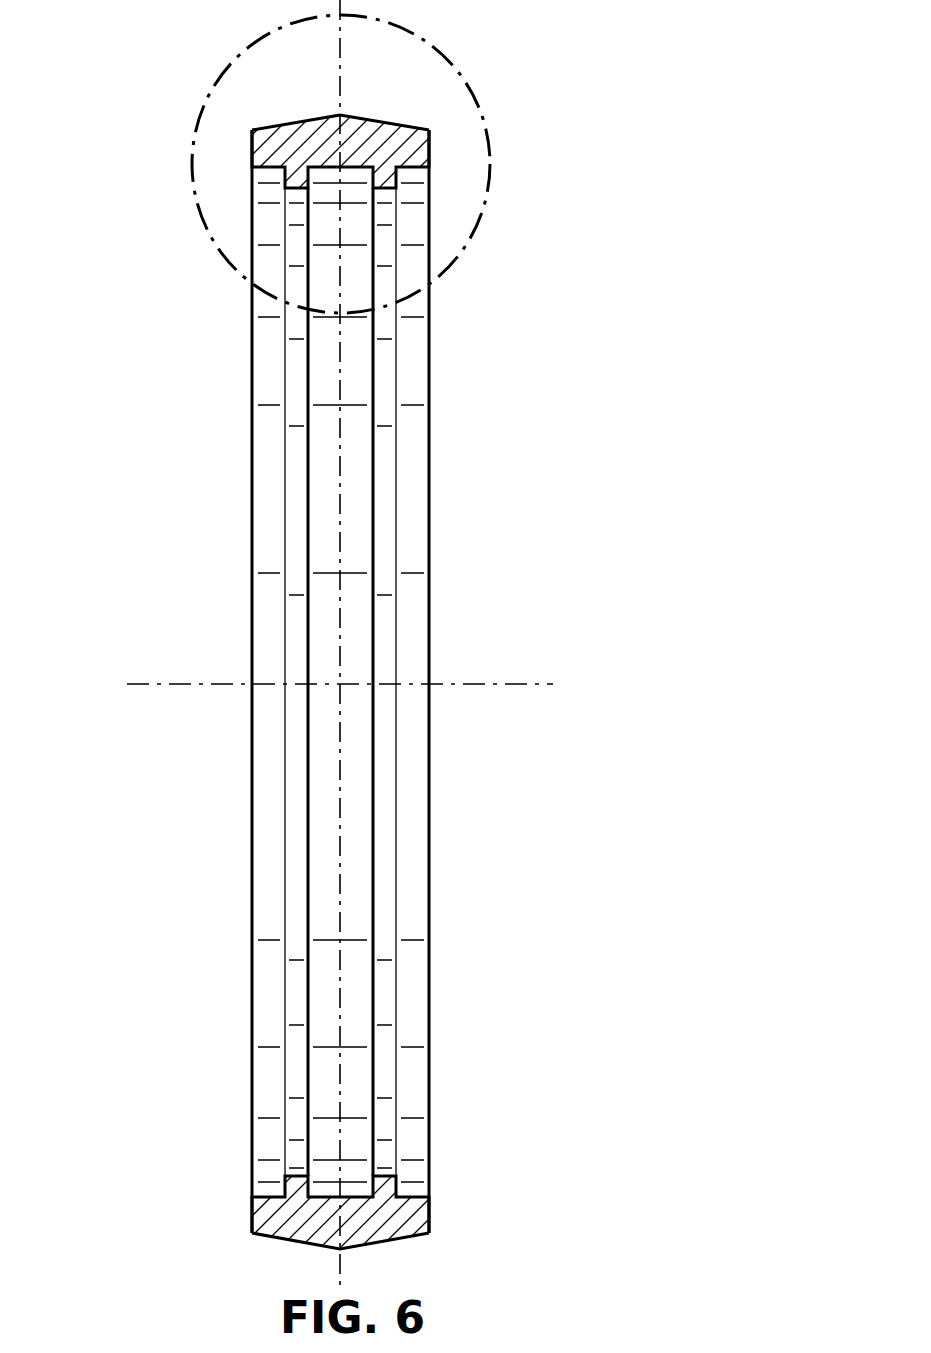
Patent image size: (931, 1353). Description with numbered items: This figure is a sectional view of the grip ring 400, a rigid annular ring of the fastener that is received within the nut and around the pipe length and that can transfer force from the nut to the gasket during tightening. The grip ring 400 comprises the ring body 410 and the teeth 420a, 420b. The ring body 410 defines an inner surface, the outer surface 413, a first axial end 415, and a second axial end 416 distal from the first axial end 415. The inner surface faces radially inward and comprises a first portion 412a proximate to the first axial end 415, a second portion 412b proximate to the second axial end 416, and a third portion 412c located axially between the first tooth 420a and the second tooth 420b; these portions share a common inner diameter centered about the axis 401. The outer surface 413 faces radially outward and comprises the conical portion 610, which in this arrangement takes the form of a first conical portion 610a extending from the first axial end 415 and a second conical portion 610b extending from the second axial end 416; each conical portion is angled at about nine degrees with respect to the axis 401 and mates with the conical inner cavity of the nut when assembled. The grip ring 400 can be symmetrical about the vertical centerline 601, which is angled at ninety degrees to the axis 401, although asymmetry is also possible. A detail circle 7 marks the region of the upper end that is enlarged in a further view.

The detail circle of FIG. 7 is at (212, 85).
The grip ring 400 is at (512, 320).
The axis 401 is at (513, 684).
The ring body 410 is at (252, 1222).
The outer surface 413 is at (392, 1242).
The first axial end 415 is at (430, 1013).
The second axial end 416 is at (252, 1023).
The first portion 412a is at (417, 752).
The second portion 412b is at (264, 749).
The third portion 412c is at (353, 800).
The first tooth 420a is at (390, 873).
The second tooth 420b is at (297, 840).
The vertical centerline 601 is at (340, 522).
The conical portion 610 is at (372, 118).
The first conical portion 610a is at (480, 66).
The second conical portion 610b is at (298, 118).